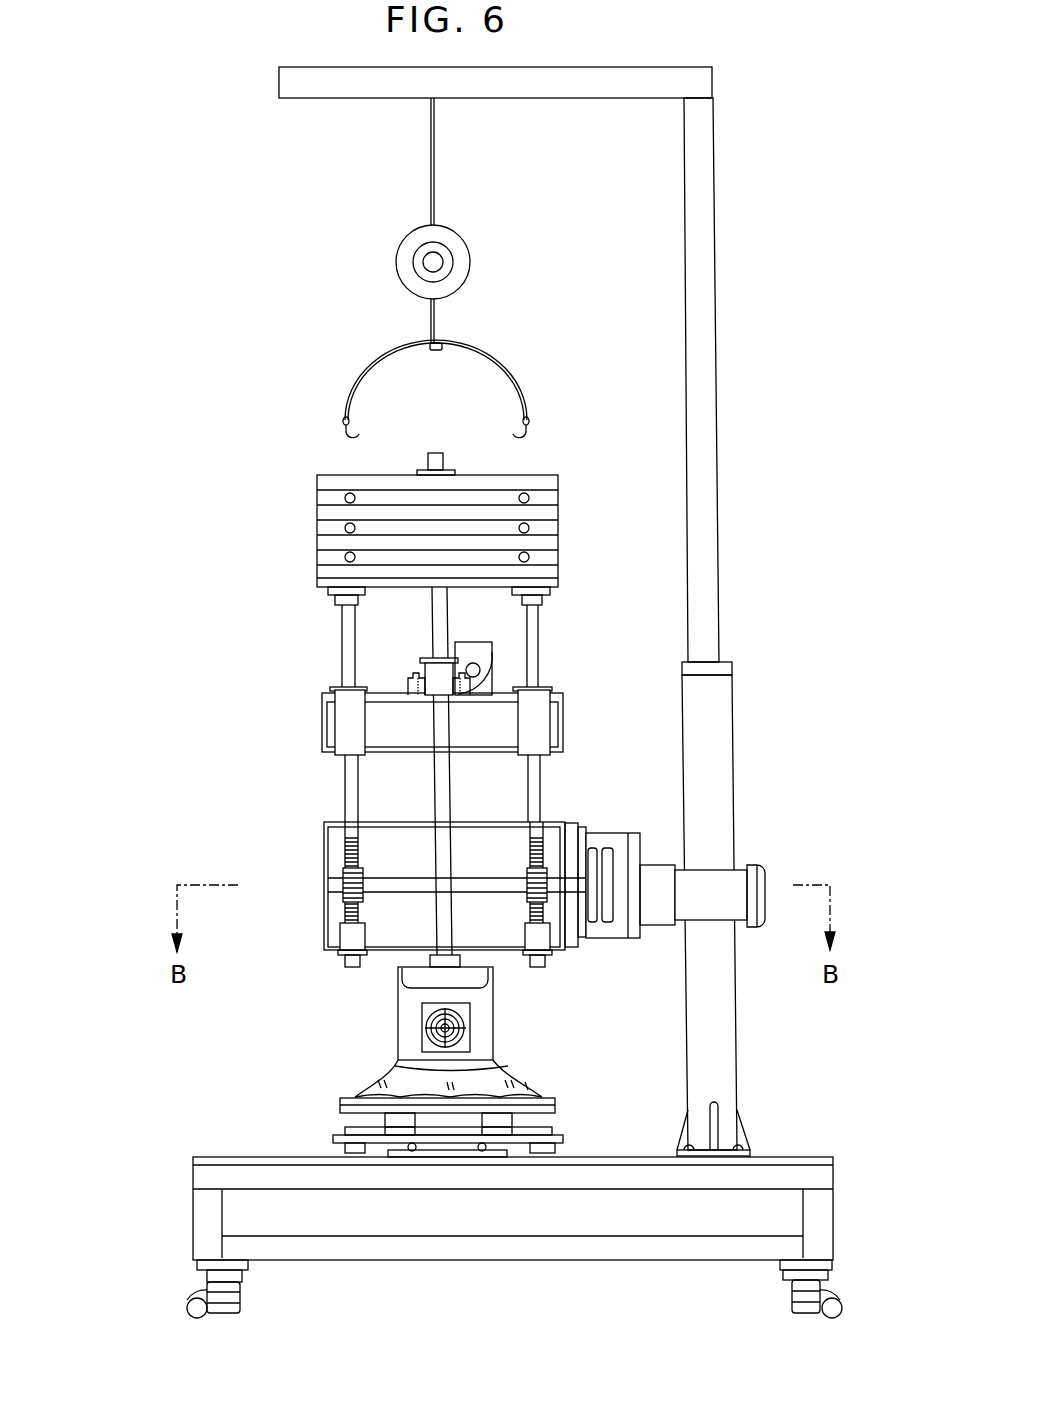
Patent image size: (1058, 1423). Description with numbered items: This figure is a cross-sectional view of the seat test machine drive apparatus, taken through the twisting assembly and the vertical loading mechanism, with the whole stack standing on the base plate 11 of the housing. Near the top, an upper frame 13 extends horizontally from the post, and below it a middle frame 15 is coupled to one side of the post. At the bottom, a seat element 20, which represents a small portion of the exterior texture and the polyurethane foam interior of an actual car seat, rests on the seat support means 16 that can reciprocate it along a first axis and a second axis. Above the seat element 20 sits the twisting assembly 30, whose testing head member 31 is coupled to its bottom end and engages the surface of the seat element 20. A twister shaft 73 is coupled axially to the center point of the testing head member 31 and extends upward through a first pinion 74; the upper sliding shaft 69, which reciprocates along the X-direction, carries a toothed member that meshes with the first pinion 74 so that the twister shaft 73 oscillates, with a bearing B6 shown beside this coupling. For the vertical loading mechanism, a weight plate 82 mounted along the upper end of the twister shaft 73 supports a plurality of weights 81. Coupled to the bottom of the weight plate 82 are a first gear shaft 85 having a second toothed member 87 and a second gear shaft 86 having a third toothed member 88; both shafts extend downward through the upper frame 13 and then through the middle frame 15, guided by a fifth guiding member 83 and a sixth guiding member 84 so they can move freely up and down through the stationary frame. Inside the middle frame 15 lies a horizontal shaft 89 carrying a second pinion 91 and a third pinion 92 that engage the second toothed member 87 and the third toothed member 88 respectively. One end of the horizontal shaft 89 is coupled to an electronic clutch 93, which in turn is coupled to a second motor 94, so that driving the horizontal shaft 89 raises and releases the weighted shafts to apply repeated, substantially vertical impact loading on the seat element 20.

The base plate 11 is at (327, 1162).
The upper frame 13 is at (323, 742).
The middle frame 15 is at (387, 820).
The seat support means 16 is at (322, 1108).
The seat element 20 is at (517, 1072).
The twisting assembly 30 is at (408, 1012).
The testing head member 31 is at (408, 977).
The upper sliding shaft 69 is at (455, 647).
The bearing B6 is at (480, 675).
The twister shaft 73 is at (437, 613).
The first pinion 74 is at (418, 668).
The weights 81 is at (323, 513).
The weight plate 82 is at (323, 580).
The fifth guiding member 83 is at (340, 723).
The sixth guiding member 84 is at (535, 728).
The first gear shaft 85 is at (347, 773).
The second gear shaft 86 is at (537, 782).
The second toothed member 87 is at (347, 838).
The third toothed member 88 is at (543, 847).
The horizontal shaft 89 is at (333, 883).
The second pinion 91 is at (347, 897).
The third pinion 92 is at (540, 897).
The electronic clutch 93 is at (665, 838).
The second motor 94 is at (765, 880).